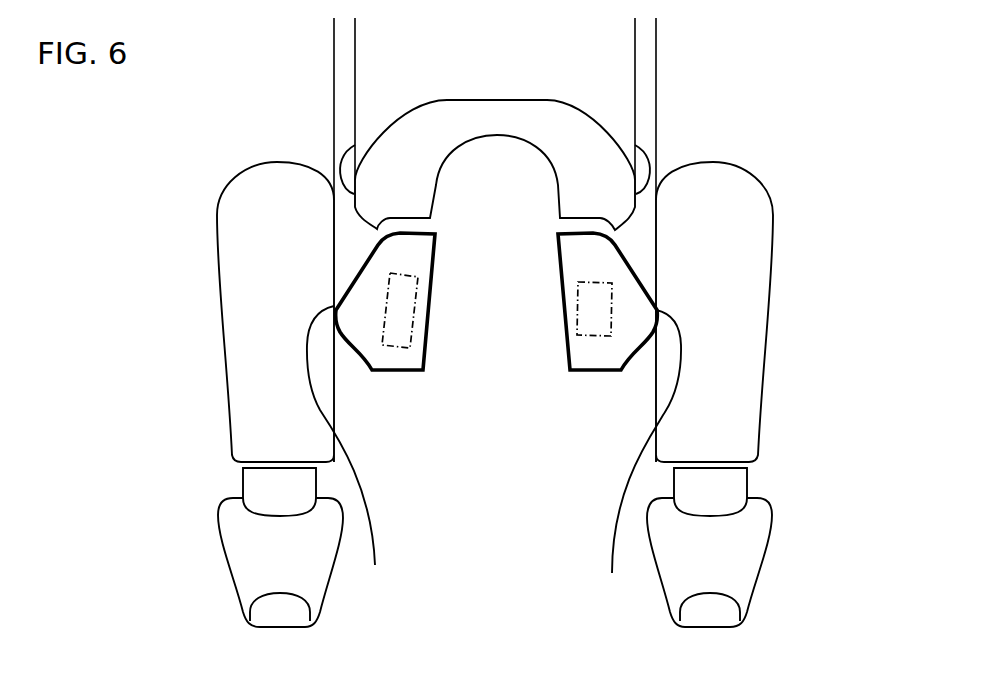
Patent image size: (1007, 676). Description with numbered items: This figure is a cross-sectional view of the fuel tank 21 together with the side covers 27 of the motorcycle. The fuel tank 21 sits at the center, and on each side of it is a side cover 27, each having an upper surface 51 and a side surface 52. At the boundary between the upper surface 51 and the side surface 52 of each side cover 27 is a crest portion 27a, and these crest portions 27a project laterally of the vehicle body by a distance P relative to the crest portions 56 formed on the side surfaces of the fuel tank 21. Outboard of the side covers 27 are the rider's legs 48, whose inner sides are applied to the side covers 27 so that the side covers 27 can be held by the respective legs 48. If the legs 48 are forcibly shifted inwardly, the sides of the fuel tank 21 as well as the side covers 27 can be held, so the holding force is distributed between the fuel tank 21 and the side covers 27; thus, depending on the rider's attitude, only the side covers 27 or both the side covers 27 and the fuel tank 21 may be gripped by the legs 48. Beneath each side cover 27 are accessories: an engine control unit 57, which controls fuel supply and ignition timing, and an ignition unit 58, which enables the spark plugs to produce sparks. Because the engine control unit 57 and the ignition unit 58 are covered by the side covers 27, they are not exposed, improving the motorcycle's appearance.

The fuel tank 21 is at (477, 100).
The crest portions of side surfaces of the fuel tank 56 is at (356, 145).
The upper surfaces 51 is at (380, 243).
The legs 48 is at (216, 236).
The engine control unit 57 is at (418, 319).
The ignition unit 58 is at (577, 307).
The side surfaces 52 is at (350, 357).
The side covers 27 is at (407, 372).
The crest portions 27a is at (494, 460).
The distance P is at (388, 33).